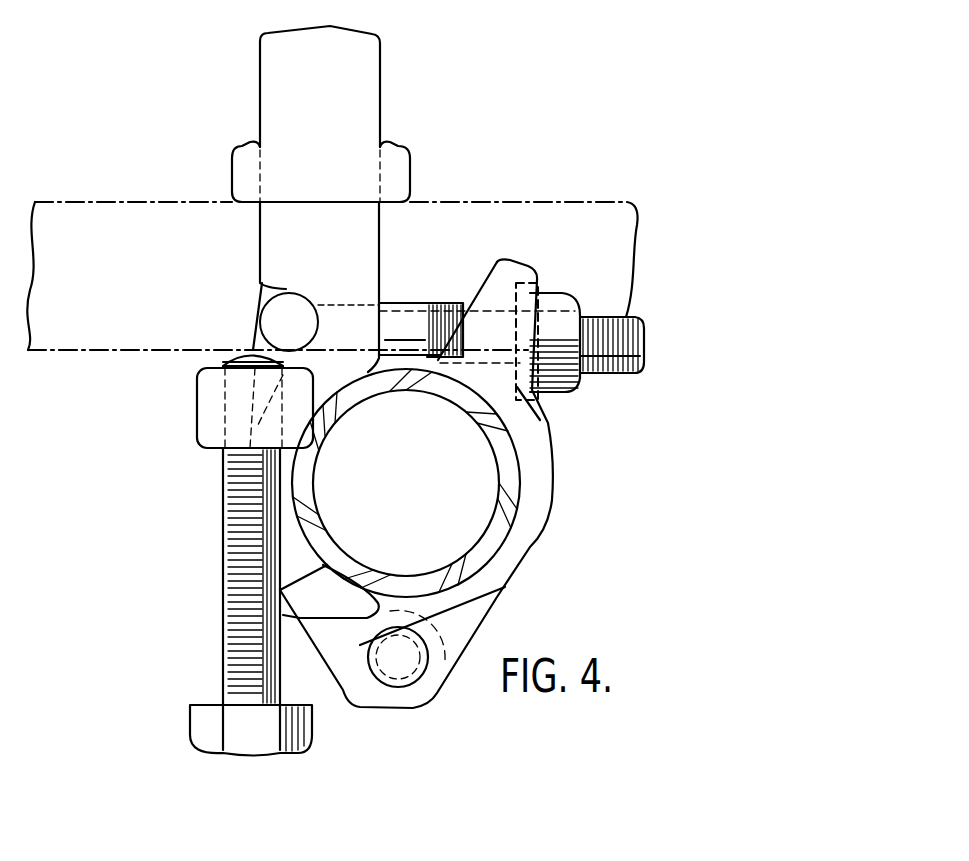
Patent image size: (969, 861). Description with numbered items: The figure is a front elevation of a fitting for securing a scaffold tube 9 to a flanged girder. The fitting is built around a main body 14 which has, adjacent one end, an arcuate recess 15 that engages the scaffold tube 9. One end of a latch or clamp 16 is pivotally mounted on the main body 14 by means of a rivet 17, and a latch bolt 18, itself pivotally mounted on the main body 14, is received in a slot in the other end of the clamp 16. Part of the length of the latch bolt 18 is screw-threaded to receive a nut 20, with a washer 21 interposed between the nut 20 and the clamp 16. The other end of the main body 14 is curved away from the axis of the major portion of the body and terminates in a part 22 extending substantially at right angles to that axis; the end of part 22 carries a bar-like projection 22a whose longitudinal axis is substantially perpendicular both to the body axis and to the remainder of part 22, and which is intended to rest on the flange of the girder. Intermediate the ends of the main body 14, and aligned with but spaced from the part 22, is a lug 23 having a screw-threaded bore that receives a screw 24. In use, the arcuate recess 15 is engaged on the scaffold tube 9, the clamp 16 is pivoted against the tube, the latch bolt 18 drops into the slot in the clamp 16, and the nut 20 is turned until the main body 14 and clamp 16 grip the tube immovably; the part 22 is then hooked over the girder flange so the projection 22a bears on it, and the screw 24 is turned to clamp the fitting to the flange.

The scaffold tube 9 is at (262, 598).
The main body 14 is at (262, 236).
The arcuate recess 15 is at (292, 485).
The clamp 16 is at (526, 541).
The rivet 17 is at (412, 668).
The latch bolt 18 is at (410, 313).
The nut 20 is at (575, 304).
The washer 21 is at (530, 373).
The part 22 is at (285, 137).
The bar-like projection 22a is at (402, 172).
The lug 23 is at (210, 426).
The screw 24 is at (235, 737).